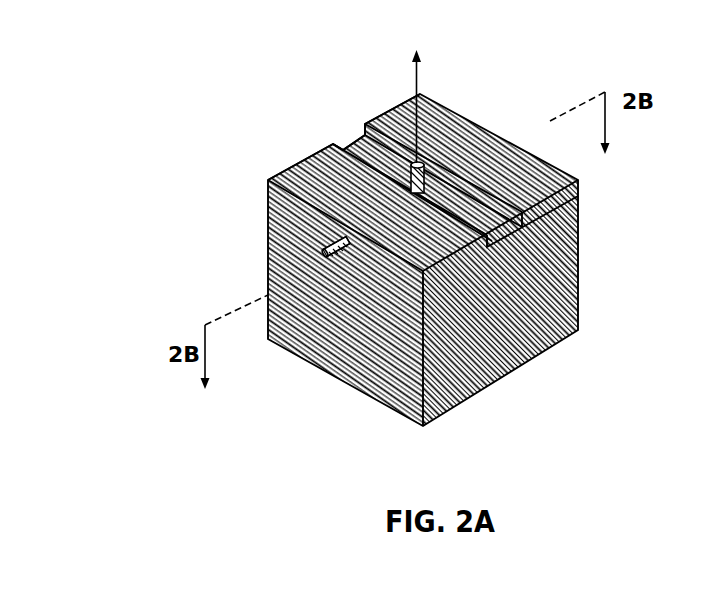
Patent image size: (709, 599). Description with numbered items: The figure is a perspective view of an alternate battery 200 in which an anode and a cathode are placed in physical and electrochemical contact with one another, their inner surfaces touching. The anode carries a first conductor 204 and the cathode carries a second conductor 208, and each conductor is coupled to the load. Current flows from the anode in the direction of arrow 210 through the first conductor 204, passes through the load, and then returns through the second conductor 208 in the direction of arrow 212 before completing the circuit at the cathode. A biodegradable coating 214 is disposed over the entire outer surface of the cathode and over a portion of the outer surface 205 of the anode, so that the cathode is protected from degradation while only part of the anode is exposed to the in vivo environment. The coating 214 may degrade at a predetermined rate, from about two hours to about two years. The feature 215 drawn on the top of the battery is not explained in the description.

The block assembly 200 is at (264, 59).
The upper plate 204 is at (362, 154).
The lower plate interface 205 is at (518, 229).
The aperture 208 is at (326, 246).
The vertical axis arrow 210 is at (414, 63).
The pin 212 is at (320, 257).
The side surface 214 is at (563, 300).
The slot 215 is at (461, 184).